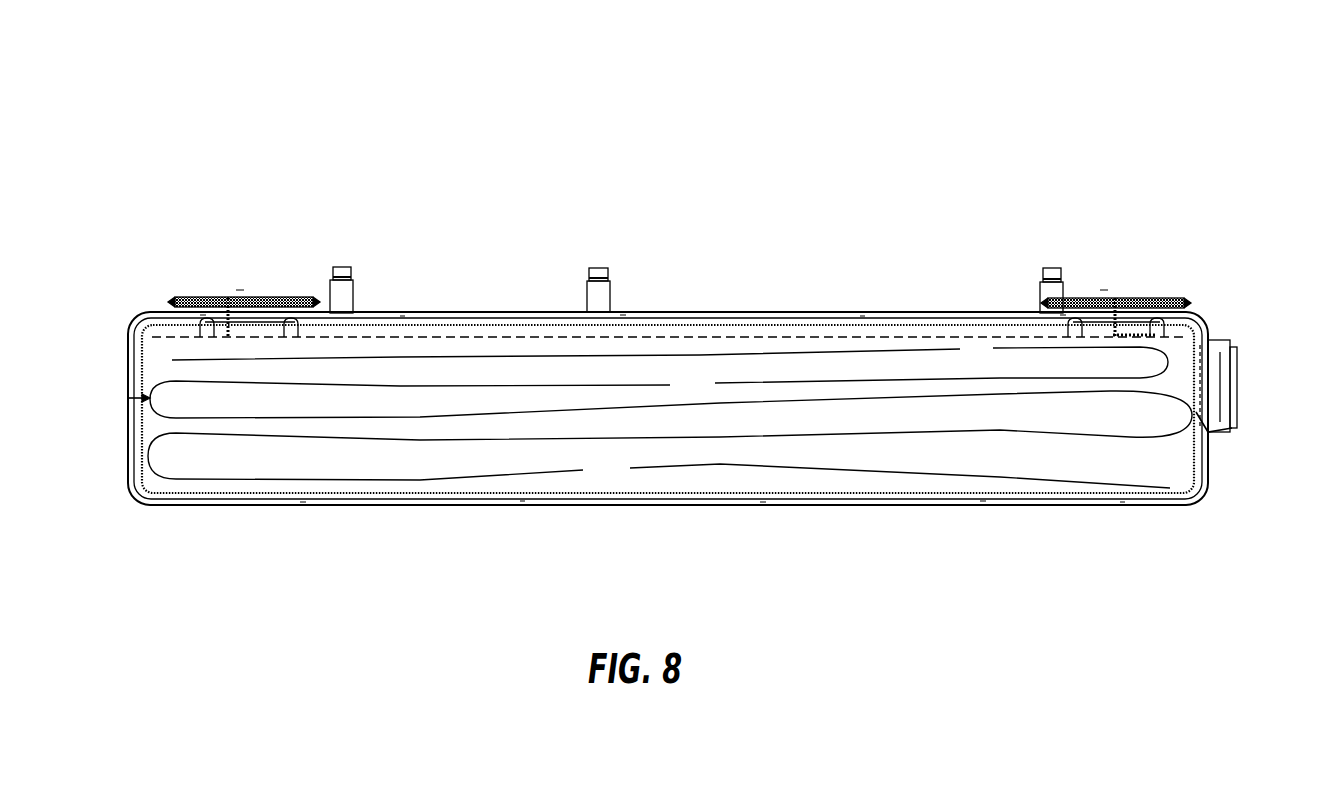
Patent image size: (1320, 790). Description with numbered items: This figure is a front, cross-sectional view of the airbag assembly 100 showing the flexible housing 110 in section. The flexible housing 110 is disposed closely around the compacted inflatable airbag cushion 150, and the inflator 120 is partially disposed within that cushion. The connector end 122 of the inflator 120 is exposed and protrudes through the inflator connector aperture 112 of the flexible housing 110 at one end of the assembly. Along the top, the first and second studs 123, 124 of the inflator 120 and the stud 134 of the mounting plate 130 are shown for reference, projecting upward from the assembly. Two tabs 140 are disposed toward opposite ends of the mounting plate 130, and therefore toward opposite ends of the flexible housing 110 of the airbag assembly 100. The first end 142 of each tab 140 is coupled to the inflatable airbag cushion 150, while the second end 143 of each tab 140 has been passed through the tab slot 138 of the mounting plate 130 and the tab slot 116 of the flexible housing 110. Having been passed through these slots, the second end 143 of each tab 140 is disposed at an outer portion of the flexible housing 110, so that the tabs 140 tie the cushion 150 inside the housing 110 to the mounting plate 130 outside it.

The airbag assembly 100 is at (1002, 175).
The flexible housing 110 is at (838, 506).
The inflator connector aperture 112 is at (1212, 360).
The tab slot 116 is at (240, 288).
The inflator 120 is at (848, 368).
The connector end 122 is at (1240, 378).
The first stud 123 is at (596, 292).
The second stud 124 is at (1052, 288).
The mounting plate 130 is at (720, 317).
The stud 134 is at (343, 293).
The tab slot 138 is at (250, 282).
The tab 140 is at (210, 297).
The first end 142 is at (128, 398).
The second end 143 is at (280, 297).
The inflatable airbag cushion 150 is at (665, 460).